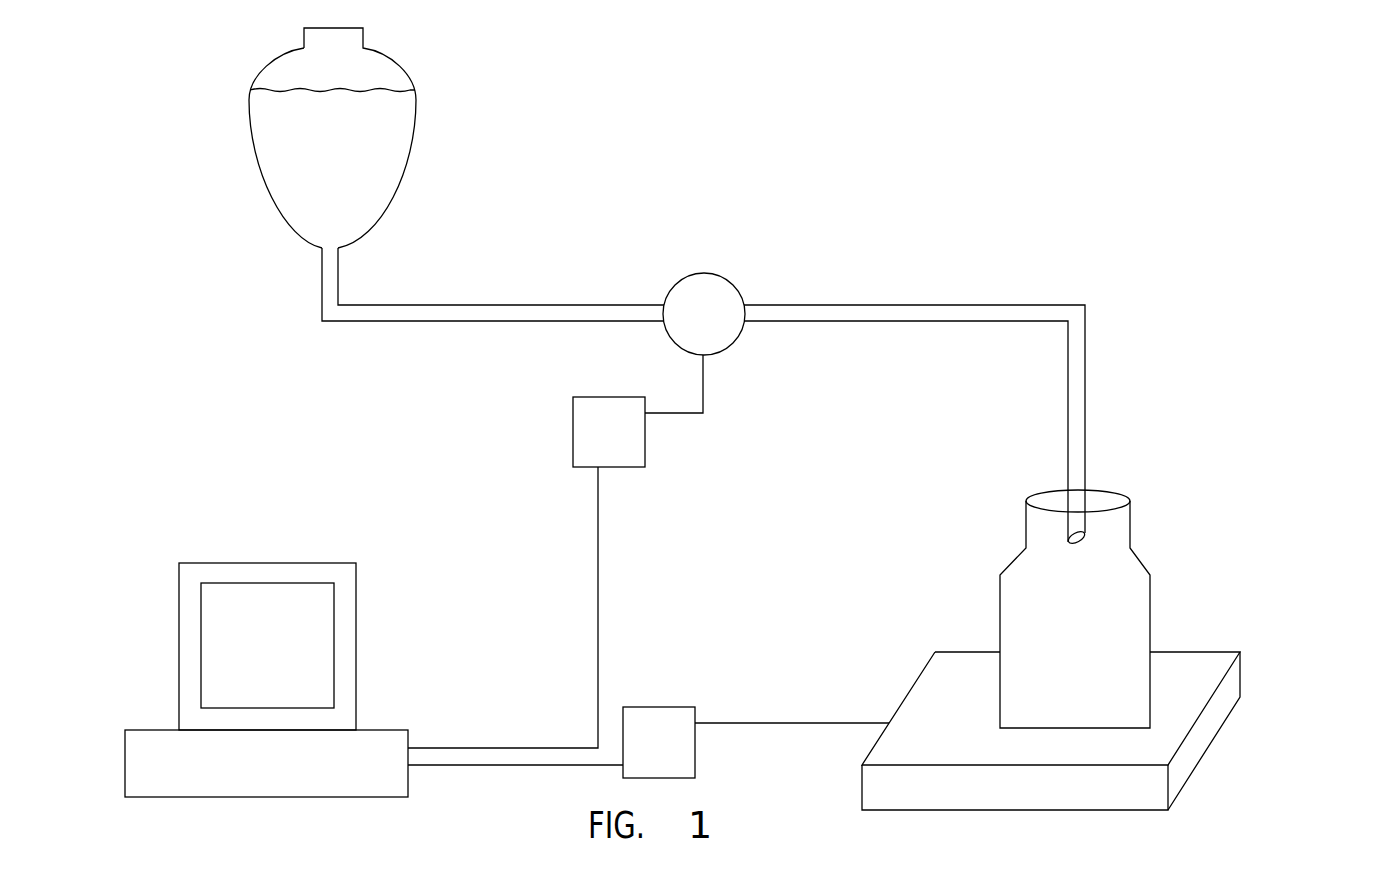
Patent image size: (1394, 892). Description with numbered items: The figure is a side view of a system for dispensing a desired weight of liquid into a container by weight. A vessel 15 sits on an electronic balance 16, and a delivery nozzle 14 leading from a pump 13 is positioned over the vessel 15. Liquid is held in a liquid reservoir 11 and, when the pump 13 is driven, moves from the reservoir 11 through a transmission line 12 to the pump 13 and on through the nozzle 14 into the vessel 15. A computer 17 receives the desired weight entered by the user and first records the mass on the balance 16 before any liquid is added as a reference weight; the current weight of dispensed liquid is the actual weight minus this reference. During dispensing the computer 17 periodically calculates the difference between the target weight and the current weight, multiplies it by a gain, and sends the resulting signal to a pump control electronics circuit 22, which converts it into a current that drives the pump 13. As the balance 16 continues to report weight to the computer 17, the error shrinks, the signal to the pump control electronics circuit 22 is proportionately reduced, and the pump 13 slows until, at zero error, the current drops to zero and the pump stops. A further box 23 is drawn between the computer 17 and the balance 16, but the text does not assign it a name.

The liquid reservoir 11 is at (415, 120).
The transmission line 12 is at (472, 319).
The pump 13 is at (725, 278).
The delivery nozzle 14 is at (1085, 420).
The vessel 15 is at (1150, 612).
The electronic balance 16 is at (1213, 722).
The computer 17 is at (178, 620).
The pump control electronics circuit 22 is at (645, 457).
The interface unit 23 is at (683, 707).